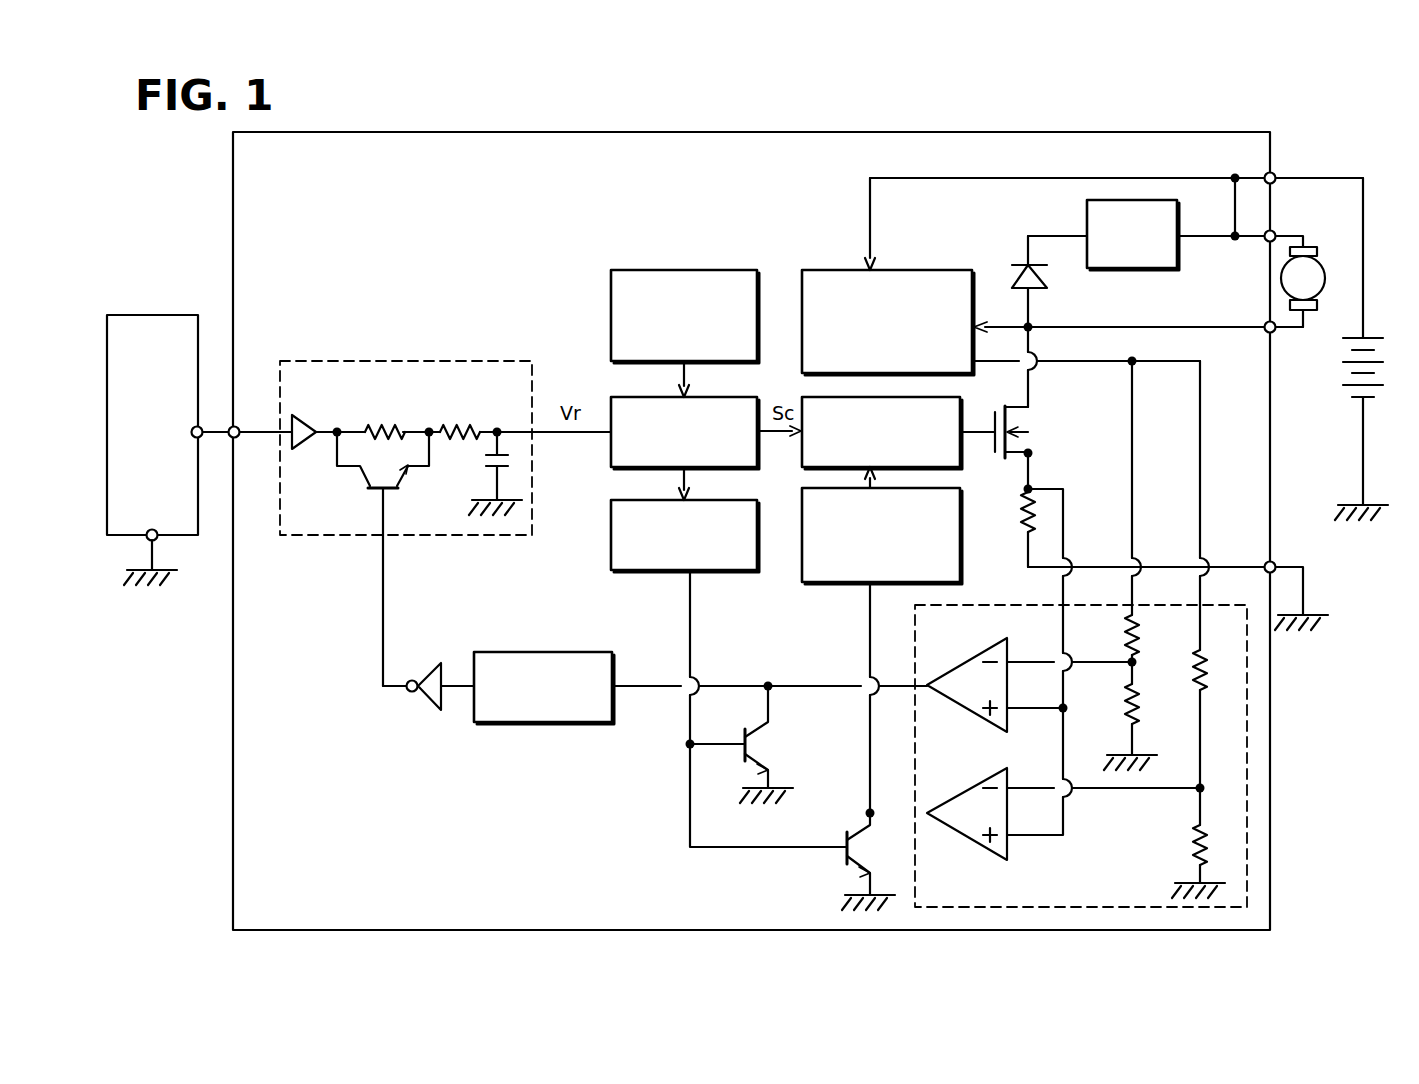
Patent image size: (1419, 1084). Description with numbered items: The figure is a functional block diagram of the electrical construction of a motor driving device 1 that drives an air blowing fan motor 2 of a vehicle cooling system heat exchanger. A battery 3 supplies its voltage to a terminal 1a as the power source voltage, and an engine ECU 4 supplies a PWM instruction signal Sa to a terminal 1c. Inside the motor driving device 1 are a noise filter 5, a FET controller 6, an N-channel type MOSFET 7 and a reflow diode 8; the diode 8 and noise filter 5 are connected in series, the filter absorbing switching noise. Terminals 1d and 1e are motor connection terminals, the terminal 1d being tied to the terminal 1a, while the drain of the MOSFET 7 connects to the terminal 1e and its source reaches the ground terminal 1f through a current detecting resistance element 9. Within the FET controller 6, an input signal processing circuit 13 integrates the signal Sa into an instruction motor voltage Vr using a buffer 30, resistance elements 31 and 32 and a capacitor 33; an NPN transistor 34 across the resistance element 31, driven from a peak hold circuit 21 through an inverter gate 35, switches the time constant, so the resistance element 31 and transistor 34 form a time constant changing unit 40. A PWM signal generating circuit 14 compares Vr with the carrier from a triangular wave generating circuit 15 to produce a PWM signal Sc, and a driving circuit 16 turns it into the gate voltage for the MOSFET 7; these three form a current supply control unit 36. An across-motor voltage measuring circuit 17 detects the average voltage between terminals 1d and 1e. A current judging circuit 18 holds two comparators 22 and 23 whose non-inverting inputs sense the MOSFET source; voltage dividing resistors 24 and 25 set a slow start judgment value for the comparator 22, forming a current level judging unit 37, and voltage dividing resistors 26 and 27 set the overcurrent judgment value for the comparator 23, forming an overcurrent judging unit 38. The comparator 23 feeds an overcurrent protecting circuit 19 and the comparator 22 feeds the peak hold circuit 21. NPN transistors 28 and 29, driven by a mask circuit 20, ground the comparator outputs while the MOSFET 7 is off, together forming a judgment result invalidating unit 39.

The motor driving device 1 is at (655, 132).
The terminal 1a is at (1273, 173).
The terminal 1c is at (232, 440).
The terminal 1d is at (1273, 230).
The terminal 1e is at (1275, 334).
The terminal 1f is at (1275, 559).
The air blowing fan motor 2 is at (1319, 267).
The battery 3 is at (1345, 391).
The engine ECU 4 is at (160, 315).
The noise filter 5 is at (1130, 270).
The FET controller 6 is at (555, 241).
The N-channel type MOSFET 7 is at (1020, 418).
The diode 8 is at (1040, 287).
The current detecting resistance element 9 is at (1024, 540).
The input signal processing circuit 13 is at (432, 360).
The PWM signal generating circuit 14 is at (723, 397).
The triangular wave generating circuit 15 is at (712, 270).
The driving circuit 16 is at (964, 395).
The across-motor voltage measuring circuit 17 is at (916, 270).
The current judging circuit 18 is at (1247, 757).
The overcurrent protecting circuit 19 is at (954, 488).
The mask circuit 20 is at (723, 500).
The peak hold circuit 21 is at (574, 650).
The comparator 22 is at (966, 711).
The comparator 23 is at (966, 837).
The voltage dividing resistor 24 is at (1124, 627).
The voltage dividing resistor 25 is at (1124, 707).
The voltage dividing resistor 26 is at (1200, 655).
The voltage dividing resistor 27 is at (1200, 830).
The NPN transistor 28 is at (763, 748).
The NPN transistor 29 is at (857, 853).
The buffer 30 is at (300, 417).
The resistance element 31 is at (404, 422).
The resistance element 32 is at (479, 422).
The capacitor 33 is at (482, 486).
The NPN transistor 34 is at (403, 486).
The inverter gate 35 is at (428, 666).
The current supply control unit 36 is at (790, 487).
The current level judging unit 37 is at (1045, 648).
The overcurrent judging unit 38 is at (1083, 822).
The judgment result invalidating unit 39 is at (805, 665).
The time constant changing unit 40 is at (349, 507).